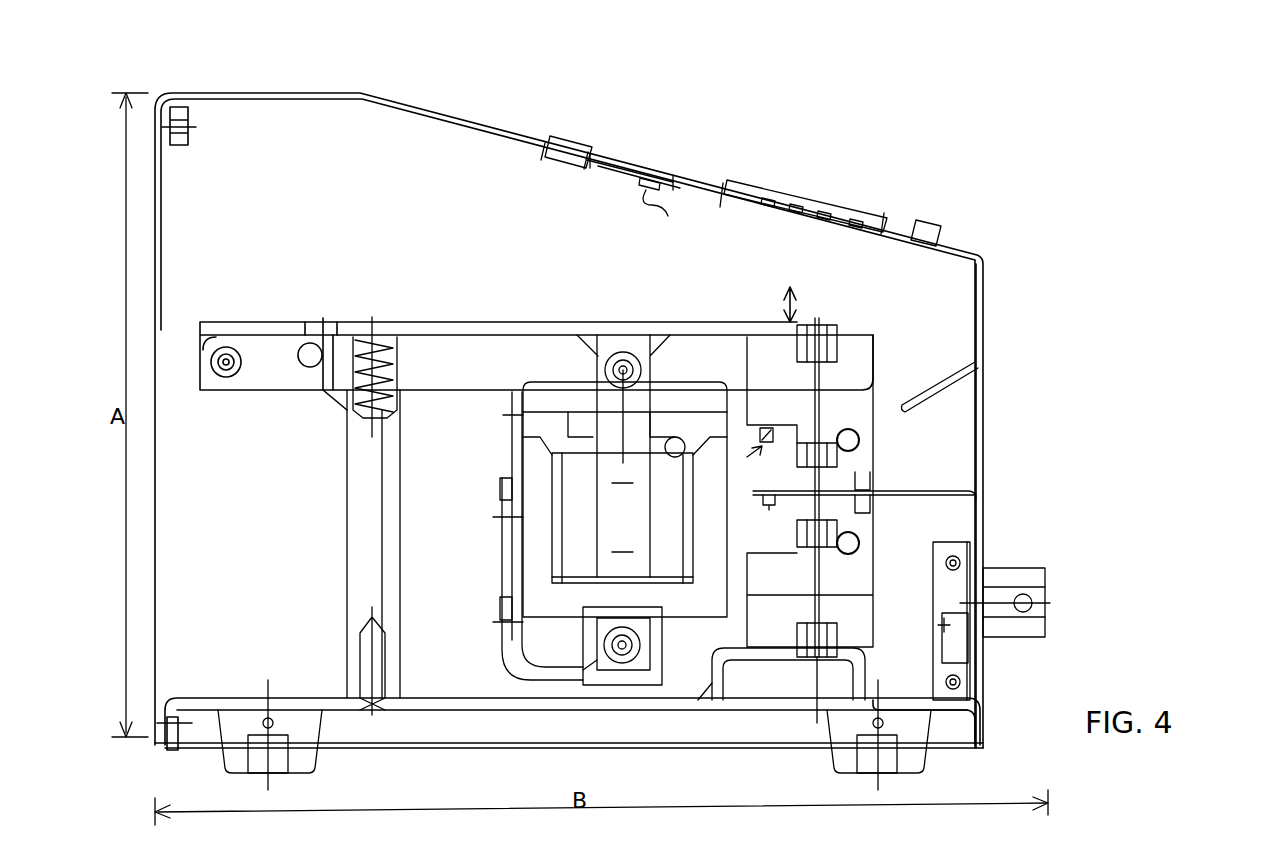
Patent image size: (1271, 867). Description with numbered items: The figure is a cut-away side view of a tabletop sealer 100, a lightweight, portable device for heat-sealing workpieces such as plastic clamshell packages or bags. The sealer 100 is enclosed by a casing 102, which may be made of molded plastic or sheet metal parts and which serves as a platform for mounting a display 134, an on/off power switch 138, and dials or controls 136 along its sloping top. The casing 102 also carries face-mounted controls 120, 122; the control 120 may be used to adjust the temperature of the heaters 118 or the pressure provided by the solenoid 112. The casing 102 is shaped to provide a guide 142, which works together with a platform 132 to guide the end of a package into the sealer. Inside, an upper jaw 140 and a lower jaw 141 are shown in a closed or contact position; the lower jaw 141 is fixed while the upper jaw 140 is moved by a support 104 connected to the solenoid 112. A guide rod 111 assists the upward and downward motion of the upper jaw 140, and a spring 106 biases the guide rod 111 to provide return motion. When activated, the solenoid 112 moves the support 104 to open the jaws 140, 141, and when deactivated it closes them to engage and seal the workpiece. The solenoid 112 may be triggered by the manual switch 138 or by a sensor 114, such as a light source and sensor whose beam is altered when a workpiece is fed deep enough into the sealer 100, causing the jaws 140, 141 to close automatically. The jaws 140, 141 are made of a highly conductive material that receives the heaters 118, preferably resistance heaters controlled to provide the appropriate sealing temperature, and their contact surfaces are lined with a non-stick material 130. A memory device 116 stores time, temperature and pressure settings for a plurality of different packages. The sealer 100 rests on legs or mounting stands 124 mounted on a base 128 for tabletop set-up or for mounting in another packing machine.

The tabletop sealer 100 is at (980, 101).
The casing 102 is at (445, 113).
The support 104 is at (475, 360).
The spring 106 is at (393, 333).
The guide rod 111 is at (373, 527).
The solenoid 112 is at (640, 580).
The sensor 114 is at (752, 456).
The memory device 116 is at (672, 210).
The heaters 118 is at (858, 437).
The control 120 is at (1045, 580).
The control 122 is at (985, 650).
The mounting stands 124 is at (318, 762).
The base 128 is at (600, 712).
The non-stick material 130 is at (870, 483).
The platform 132 is at (955, 482).
The display 134 is at (800, 193).
The controls 136 is at (940, 222).
The power switch 138 is at (566, 139).
The upper jaw 140 is at (862, 410).
The lower jaw 141 is at (862, 565).
The guide 142 is at (948, 388).